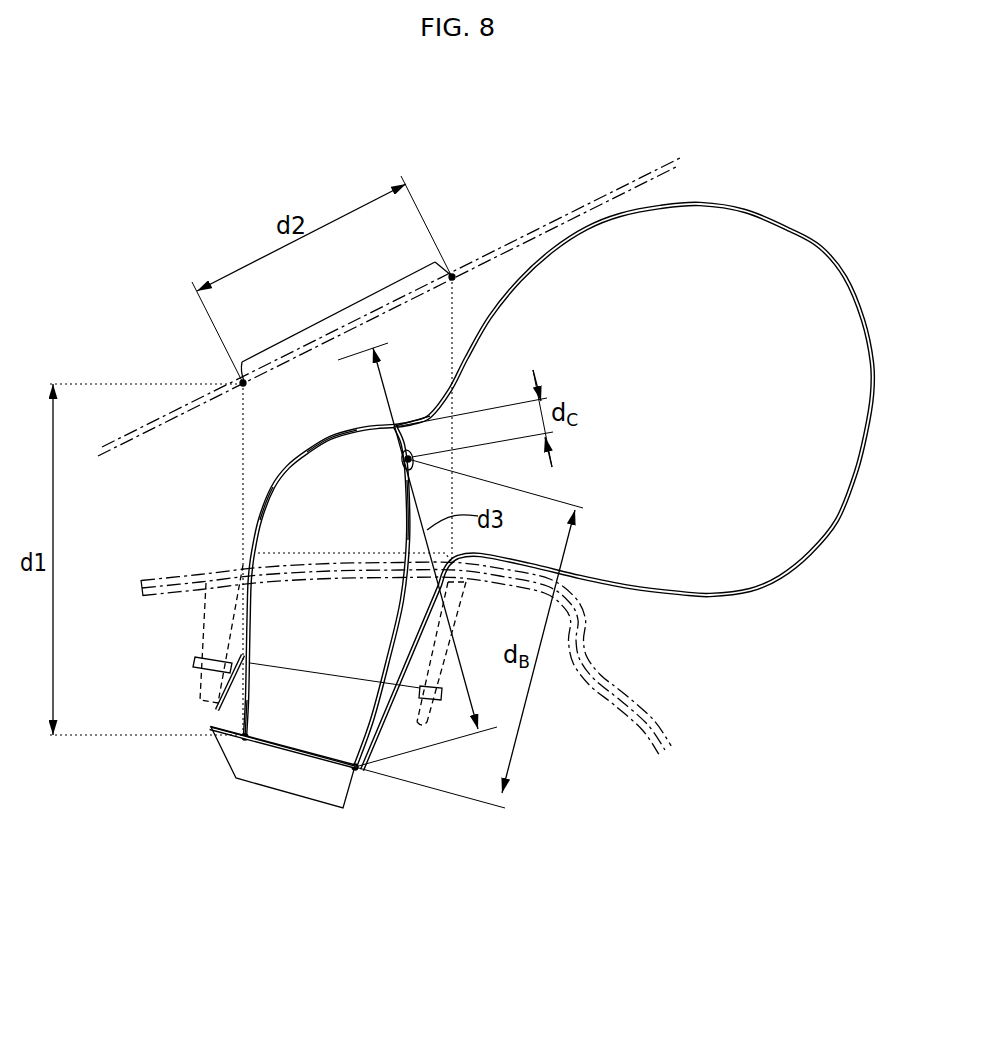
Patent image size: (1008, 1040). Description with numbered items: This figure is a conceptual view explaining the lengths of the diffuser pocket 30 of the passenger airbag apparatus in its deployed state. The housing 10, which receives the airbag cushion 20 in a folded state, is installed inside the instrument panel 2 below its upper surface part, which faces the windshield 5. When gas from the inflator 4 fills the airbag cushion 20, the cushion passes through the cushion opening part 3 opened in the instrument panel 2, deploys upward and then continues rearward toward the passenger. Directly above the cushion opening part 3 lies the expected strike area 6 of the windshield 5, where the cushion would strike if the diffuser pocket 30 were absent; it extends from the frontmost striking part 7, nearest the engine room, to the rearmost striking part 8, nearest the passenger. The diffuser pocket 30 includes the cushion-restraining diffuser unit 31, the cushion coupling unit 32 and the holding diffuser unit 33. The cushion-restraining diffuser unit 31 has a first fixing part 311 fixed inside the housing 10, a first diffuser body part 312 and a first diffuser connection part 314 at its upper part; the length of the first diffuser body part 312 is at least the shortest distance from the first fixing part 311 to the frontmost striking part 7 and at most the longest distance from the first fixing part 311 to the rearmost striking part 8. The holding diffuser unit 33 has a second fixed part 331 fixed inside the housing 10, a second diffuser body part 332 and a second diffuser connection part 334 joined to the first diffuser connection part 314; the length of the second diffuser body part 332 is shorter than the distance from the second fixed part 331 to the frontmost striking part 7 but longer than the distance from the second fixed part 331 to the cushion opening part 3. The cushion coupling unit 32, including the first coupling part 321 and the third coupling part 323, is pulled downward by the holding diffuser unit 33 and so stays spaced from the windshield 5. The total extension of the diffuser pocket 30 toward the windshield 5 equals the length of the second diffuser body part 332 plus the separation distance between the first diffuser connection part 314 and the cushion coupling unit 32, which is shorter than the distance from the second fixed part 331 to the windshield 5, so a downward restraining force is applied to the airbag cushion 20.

The instrument panel 2 is at (605, 642).
The cushion opening part 3 is at (355, 553).
The inflator 4 is at (320, 783).
The windshield 5 is at (158, 418).
The expected strike area 6 is at (348, 309).
The frontmost striking part 7 is at (238, 378).
The rearmost striking part 8 is at (452, 274).
The housing 10 is at (295, 728).
The airbag cushion 20 is at (848, 280).
The diffuser pocket 30 is at (394, 606).
The cushion-restraining diffuser unit 31 is at (248, 620).
The cushion coupling unit 32 is at (396, 424).
The holding diffuser unit 33 is at (393, 641).
The first fixing part 311 is at (243, 740).
The first diffuser body part 312 is at (193, 660).
The first diffuser connection part 314 is at (403, 490).
The first coupling part 321 is at (505, 369).
The third coupling part 323 is at (397, 443).
The second fixed part 331 is at (356, 770).
The second diffuser body part 332 is at (415, 505).
The second diffuser connection part 334 is at (397, 443).